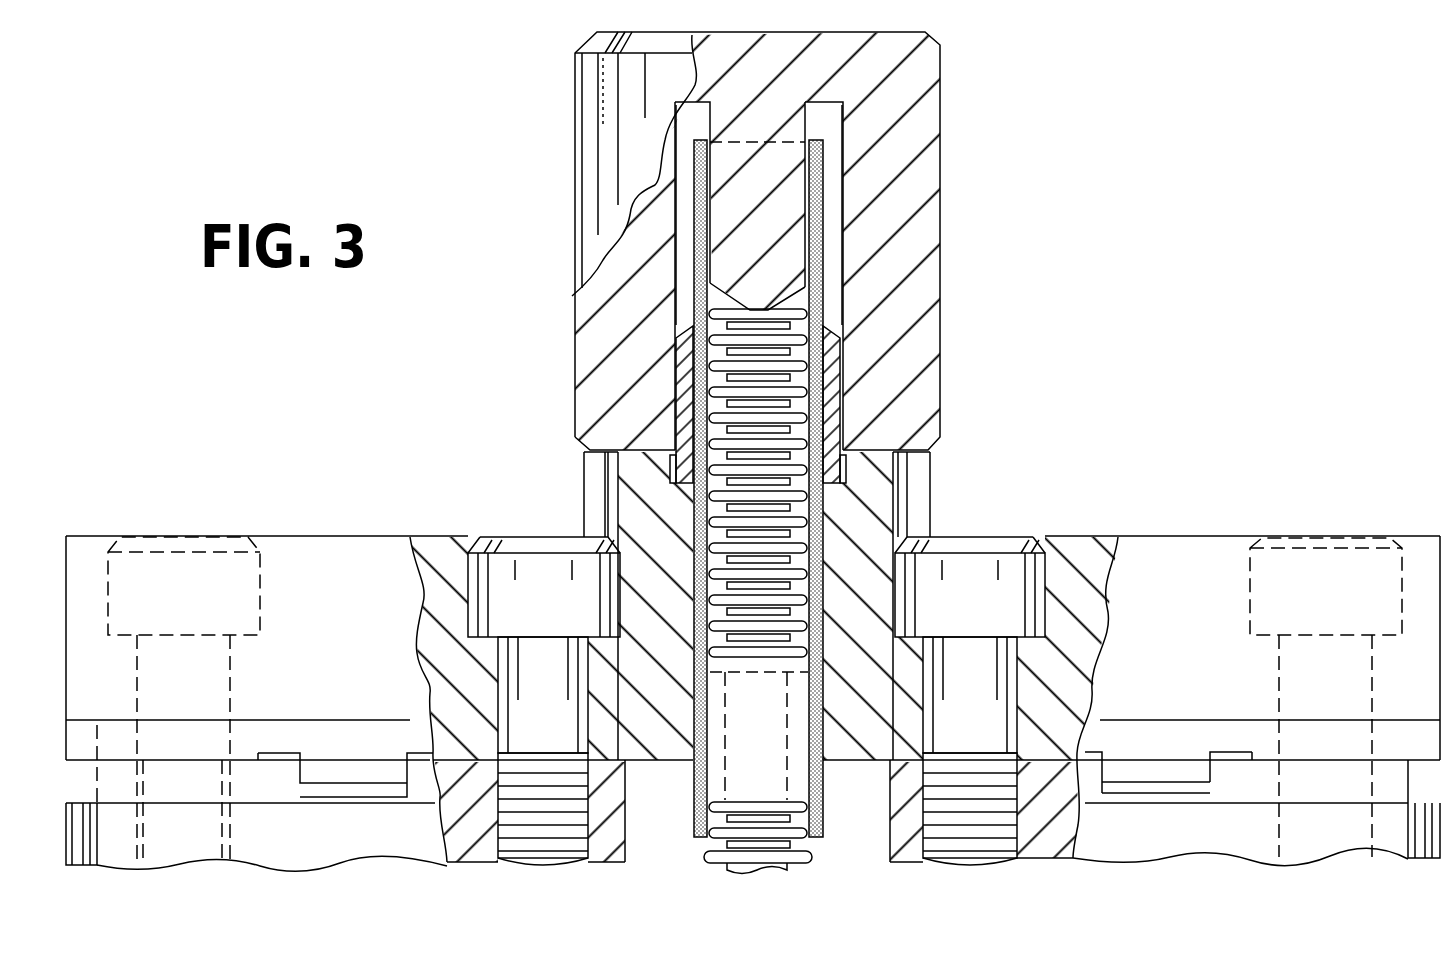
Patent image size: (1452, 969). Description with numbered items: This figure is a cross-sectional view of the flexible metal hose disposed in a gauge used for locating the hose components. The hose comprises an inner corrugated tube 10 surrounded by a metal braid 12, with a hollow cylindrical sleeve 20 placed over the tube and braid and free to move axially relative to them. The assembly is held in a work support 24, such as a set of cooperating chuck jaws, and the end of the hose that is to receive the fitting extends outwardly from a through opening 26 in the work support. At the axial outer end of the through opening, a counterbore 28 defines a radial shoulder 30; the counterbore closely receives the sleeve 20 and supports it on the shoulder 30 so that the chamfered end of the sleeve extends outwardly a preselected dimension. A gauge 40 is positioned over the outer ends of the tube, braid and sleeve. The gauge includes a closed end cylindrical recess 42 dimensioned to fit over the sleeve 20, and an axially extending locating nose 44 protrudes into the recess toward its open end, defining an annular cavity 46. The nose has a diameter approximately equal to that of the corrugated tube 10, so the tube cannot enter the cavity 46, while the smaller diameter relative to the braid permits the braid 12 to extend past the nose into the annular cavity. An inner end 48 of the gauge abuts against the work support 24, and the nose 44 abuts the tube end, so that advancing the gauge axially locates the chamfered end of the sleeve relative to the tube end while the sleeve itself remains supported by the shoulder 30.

The inner corrugated tube 10 is at (812, 362).
The metal braid 12 is at (825, 243).
The sleeve 20 is at (833, 410).
The work support 24 is at (1222, 528).
The through opening 26 is at (808, 698).
The counterbore 28 is at (840, 466).
The radial shoulder 30 is at (677, 470).
The gauge 40 is at (946, 112).
The closed end cylindrical recess 42 is at (678, 190).
The locating nose 44 is at (712, 316).
The annular cavity 46 is at (832, 166).
The inner end 48 is at (625, 472).